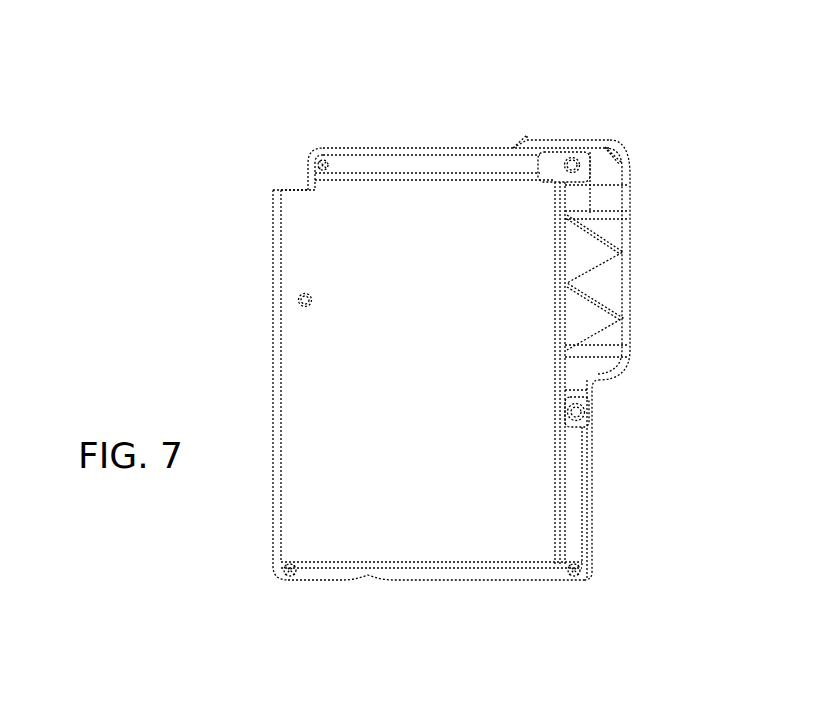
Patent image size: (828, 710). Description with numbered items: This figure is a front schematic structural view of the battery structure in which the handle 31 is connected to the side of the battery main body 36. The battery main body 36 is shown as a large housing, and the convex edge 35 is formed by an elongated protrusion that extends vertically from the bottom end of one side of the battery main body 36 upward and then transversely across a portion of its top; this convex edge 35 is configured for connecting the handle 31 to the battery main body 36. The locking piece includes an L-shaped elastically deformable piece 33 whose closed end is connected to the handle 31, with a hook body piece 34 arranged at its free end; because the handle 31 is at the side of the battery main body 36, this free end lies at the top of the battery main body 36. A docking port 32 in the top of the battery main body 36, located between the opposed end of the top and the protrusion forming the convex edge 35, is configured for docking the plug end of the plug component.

The handle 31 is at (607, 280).
The docking port 32 is at (300, 190).
The L-shaped elastically deformable piece 33 is at (597, 138).
The hook body piece 34 is at (530, 133).
The convex edge 35 is at (410, 163).
The battery main body 36 is at (470, 438).